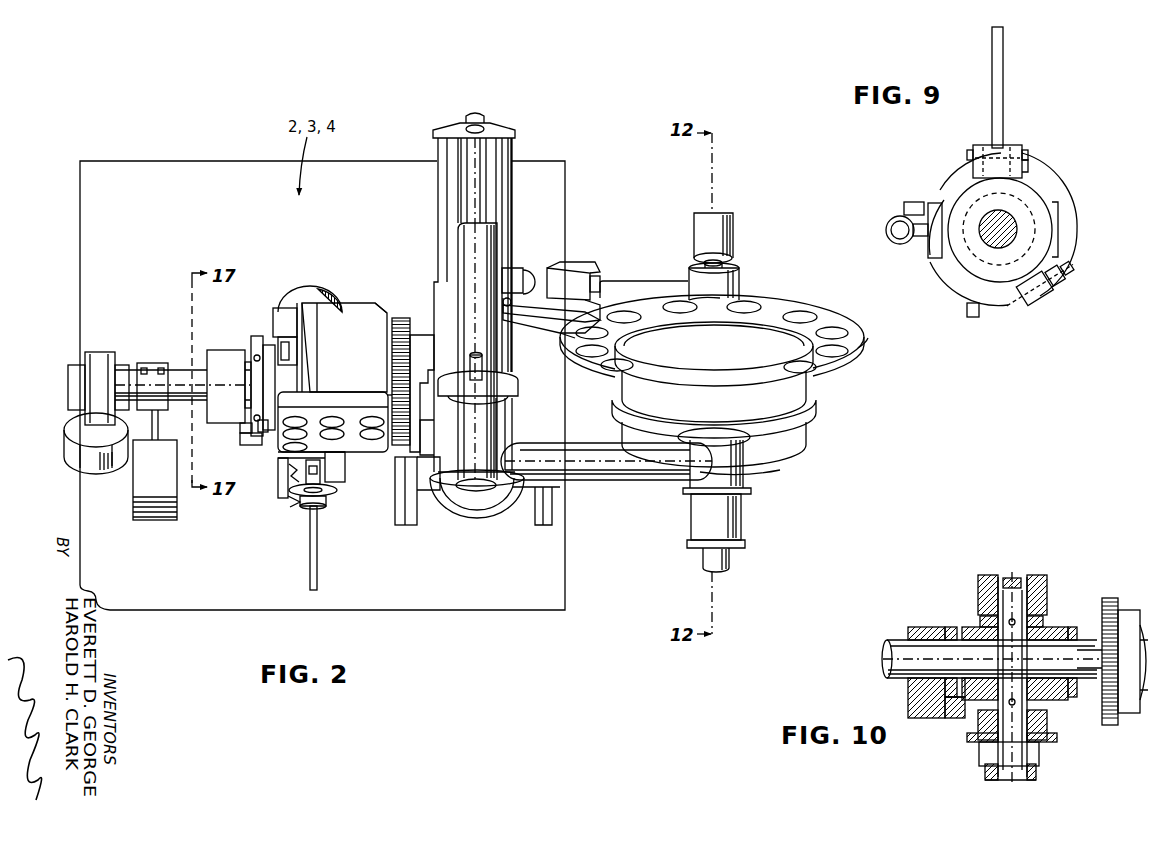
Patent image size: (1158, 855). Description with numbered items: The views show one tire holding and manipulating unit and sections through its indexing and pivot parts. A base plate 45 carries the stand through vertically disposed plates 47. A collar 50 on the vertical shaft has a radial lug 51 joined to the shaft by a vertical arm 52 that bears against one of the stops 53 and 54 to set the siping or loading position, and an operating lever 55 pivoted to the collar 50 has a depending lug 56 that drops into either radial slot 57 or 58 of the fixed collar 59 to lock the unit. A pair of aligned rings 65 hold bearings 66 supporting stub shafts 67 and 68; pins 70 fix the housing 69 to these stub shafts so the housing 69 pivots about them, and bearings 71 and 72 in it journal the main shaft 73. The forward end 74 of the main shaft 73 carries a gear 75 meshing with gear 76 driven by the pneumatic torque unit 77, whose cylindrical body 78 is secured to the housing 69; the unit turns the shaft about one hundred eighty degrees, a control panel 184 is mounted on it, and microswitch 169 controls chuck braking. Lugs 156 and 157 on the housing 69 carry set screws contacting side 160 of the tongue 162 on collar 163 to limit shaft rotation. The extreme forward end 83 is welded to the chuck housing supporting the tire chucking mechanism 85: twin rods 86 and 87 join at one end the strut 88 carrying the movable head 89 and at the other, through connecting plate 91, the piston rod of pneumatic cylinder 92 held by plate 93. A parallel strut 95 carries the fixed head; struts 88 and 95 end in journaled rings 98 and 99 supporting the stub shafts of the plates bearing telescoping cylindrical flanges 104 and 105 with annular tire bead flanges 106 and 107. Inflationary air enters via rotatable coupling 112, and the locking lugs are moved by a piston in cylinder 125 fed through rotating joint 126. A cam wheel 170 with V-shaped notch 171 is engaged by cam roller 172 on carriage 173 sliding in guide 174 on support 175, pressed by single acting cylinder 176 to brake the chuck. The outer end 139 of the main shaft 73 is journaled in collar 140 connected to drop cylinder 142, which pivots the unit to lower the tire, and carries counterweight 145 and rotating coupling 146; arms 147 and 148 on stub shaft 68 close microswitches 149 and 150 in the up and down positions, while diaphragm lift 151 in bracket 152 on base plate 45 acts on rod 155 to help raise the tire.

In FIG. 2, the base plate 45 is at (80, 196).
In FIG. 2, the rotating coupling 146 is at (68, 364).
In FIG. 2, the collar 140 is at (103, 356).
In FIG. 2, the drop cylinder 142 is at (76, 444).
In FIG. 2, the outer end of the main shaft 139 is at (178, 373).
In FIG. 10, the outer end of the main shaft 139 is at (895, 652).
In FIG. 2, the counterweight 145 is at (177, 508).
In FIG. 2, the collar 163 is at (230, 350).
In FIG. 10, the collar 163 is at (912, 695).
In FIG. 2, the housing 69 is at (255, 380).
In FIG. 10, the housing 69 is at (1042, 628).
In FIG. 2, the lug 156 is at (258, 333).
In FIG. 2, the lug 157 is at (258, 437).
In FIG. 2, the side of tongue 160 is at (250, 428).
In FIG. 2, the tongue 162 is at (250, 447).
In FIG. 10, the tongue 162 is at (950, 714).
In FIG. 2, the microswitch 169 is at (297, 325).
In FIG. 2, the aligned rings 65 is at (303, 300).
In FIG. 10, the aligned rings 65 is at (1036, 580).
In FIG. 2, the cylindrical body 78 is at (352, 312).
In FIG. 2, the pneumatic torque unit 77 is at (371, 302).
In FIG. 2, the gear 76 is at (402, 318).
In FIG. 2, the extreme forward end of the main shaft 83 is at (428, 425).
In FIG. 10, the extreme forward end of the main shaft 83 is at (1140, 712).
In FIG. 2, the gear 75 is at (398, 396).
In FIG. 10, the gear 75 is at (1110, 600).
In FIG. 2, the control panel 184 is at (340, 395).
In FIG. 2, the microswitch 149 is at (345, 460).
In FIG. 2, the arm 147 is at (290, 470).
In FIG. 2, the stub shaft 68 is at (330, 493).
In FIG. 10, the stub shaft 68 is at (1036, 743).
In FIG. 2, the microswitch 150 is at (286, 503).
In FIG. 10, the microswitch 150 is at (988, 755).
In FIG. 2, the arm 148 is at (306, 506).
In FIG. 10, the arm 148 is at (983, 782).
In FIG. 2, the vertically disposed plates 47 is at (316, 572).
In FIG. 2, the connecting plate 91 is at (464, 121).
In FIG. 2, the rod 87 is at (446, 201).
In FIG. 2, the rod 86 is at (501, 213).
In FIG. 2, the pneumatic cylinder 92 is at (462, 240).
In FIG. 2, the rod 155 is at (484, 370).
In FIG. 2, the plate 93 is at (506, 393).
In FIG. 2, the diaphragm lift 151 is at (470, 506).
In FIG. 2, the bracket 152 is at (412, 523).
In FIG. 2, the strut 88 is at (618, 468).
In FIG. 2, the journaled ring 98 is at (748, 475).
In FIG. 2, the cylinder 125 is at (742, 527).
In FIG. 2, the rotating joint 126 is at (730, 560).
In FIG. 2, the rotatable coupling 112 is at (733, 233).
In FIG. 2, the journaled ring 99 is at (740, 278).
In FIG. 2, the strut 95 is at (650, 296).
In FIG. 2, the annular tire bead flange 107 is at (800, 332).
In FIG. 2, the cam wheel 170 is at (862, 352).
In FIG. 2, the telescoping cylindrical flange 104 is at (806, 376).
In FIG. 2, the telescoping cylindrical flange 105 is at (806, 400).
In FIG. 2, the annular tire bead flange 106 is at (806, 424).
In FIG. 2, the movable head 89 is at (800, 448).
In FIG. 2, the tire chucking mechanism 85 is at (790, 460).
In FIG. 2, the single acting cylinder 176 is at (522, 275).
In FIG. 2, the guide 174 is at (566, 278).
In FIG. 2, the support 175 is at (596, 277).
In FIG. 2, the cam roller 172 is at (598, 317).
In FIG. 2, the carriage 173 is at (548, 318).
In FIG. 2, the V-shaped notch 171 is at (568, 343).
In FIG. 9, the operating lever 55 is at (1003, 78).
In FIG. 9, the depending lug 56 is at (990, 155).
In FIG. 9, the radial slot 58 is at (1024, 164).
In FIG. 9, the collar 50 is at (1030, 197).
In FIG. 9, the radial slot 57 is at (940, 190).
In FIG. 9, the fixed collar 59 is at (945, 268).
In FIG. 9, the radial lug 51 is at (940, 240).
In FIG. 9, the vertical arm 52 is at (890, 229).
In FIG. 9, the stop 53 is at (906, 205).
In FIG. 9, the stop 54 is at (968, 312).
In FIG. 10, the forward end of the main shaft 74 is at (1082, 655).
In FIG. 10, the bearing 71 is at (948, 640).
In FIG. 10, the main shaft 73 is at (985, 652).
In FIG. 10, the stub shaft 67 is at (1008, 590).
In FIG. 10, the bearings 66 is at (988, 585).
In FIG. 10, the pins 70 is at (1024, 612).
In FIG. 10, the bearing 72 is at (1075, 688).